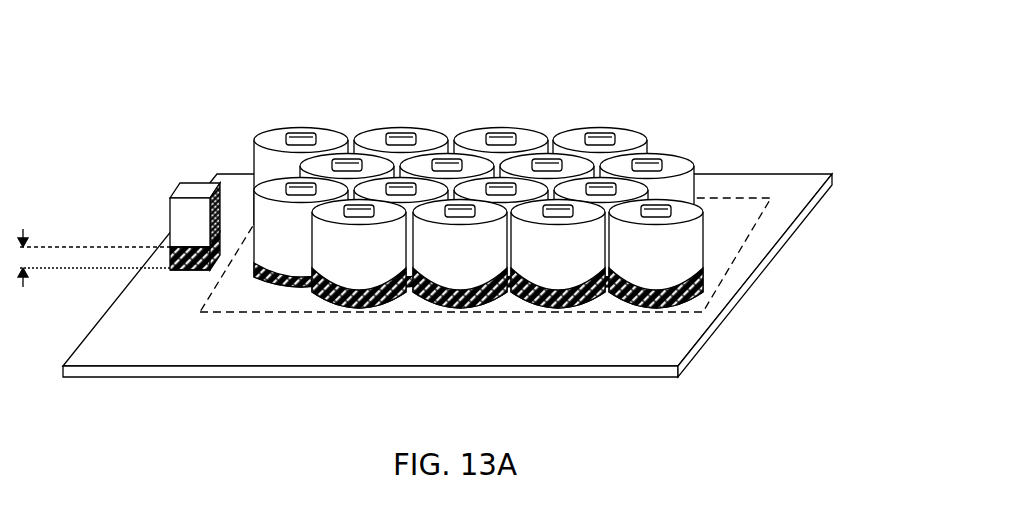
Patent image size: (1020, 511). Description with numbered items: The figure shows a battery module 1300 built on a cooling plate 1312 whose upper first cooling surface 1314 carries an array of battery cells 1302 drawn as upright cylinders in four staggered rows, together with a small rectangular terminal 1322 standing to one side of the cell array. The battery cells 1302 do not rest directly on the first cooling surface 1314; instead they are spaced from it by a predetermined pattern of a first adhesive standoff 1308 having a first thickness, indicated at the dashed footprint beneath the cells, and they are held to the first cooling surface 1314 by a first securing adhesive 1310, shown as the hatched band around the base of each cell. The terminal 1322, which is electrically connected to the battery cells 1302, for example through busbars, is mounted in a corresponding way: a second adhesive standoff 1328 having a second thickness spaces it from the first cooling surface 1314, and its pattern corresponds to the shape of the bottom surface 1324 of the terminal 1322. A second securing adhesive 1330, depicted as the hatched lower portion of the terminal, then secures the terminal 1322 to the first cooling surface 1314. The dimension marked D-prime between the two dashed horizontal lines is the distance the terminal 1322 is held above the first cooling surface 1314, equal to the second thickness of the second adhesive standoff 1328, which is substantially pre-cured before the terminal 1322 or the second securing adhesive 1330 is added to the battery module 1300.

The battery module 1300 is at (512, 56).
The battery cells 1302 is at (562, 231).
The first adhesive standoff 1308 is at (682, 315).
The first securing adhesive 1310 is at (703, 295).
The cooling plate 1312 is at (498, 241).
The first cooling surface 1314 is at (781, 186).
The terminal 1322 is at (123, 260).
The bottom surface 1324 is at (172, 249).
The second adhesive standoff 1328 is at (197, 270).
The second securing adhesive 1330 is at (170, 257).